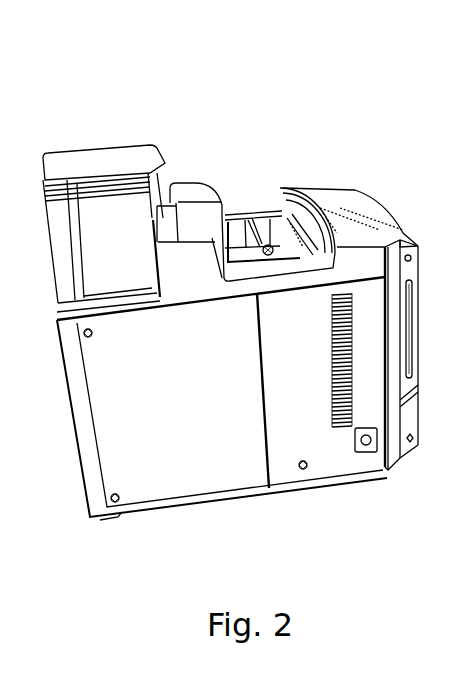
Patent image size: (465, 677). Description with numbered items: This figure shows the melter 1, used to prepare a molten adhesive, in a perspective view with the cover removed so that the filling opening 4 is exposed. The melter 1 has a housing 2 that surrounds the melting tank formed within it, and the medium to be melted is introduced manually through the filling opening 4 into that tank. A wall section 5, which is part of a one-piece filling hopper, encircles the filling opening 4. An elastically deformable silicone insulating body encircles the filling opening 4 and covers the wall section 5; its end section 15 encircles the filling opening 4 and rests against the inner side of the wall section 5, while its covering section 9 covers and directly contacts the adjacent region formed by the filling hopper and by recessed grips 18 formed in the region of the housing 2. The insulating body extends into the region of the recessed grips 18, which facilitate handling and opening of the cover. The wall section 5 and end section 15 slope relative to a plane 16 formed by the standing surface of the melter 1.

The melter 1 is at (230, 97).
The housing 2 is at (80, 395).
The filling opening 4 is at (257, 243).
The wall section 5 is at (285, 247).
The covering section 9 is at (310, 232).
The end section 15 is at (242, 212).
The plane 16 is at (82, 195).
The recessed grips 18 is at (274, 284).